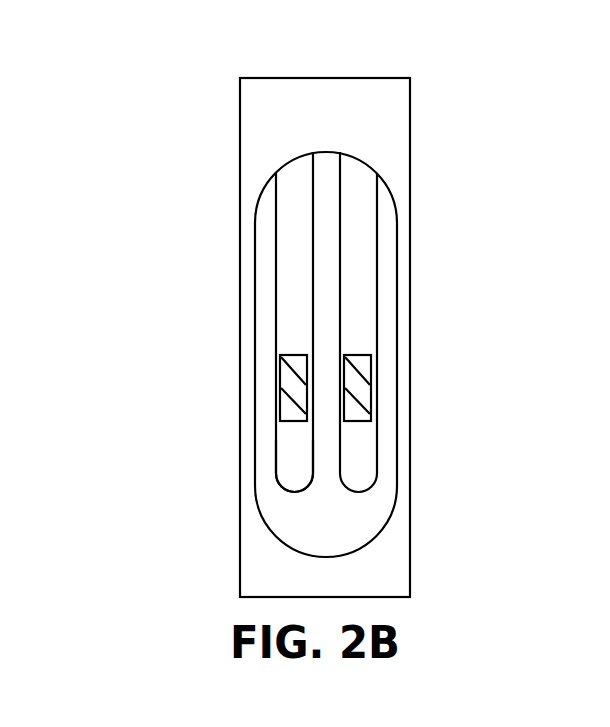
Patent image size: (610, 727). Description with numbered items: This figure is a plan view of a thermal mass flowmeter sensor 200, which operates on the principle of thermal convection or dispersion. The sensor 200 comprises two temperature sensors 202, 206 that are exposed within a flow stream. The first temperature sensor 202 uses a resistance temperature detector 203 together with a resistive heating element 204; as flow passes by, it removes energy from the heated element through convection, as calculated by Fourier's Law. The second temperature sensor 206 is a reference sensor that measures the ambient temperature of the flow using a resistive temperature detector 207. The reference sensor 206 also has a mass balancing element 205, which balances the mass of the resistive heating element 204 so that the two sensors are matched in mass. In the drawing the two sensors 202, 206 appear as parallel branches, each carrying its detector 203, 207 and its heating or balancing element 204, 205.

The thermal mass flowmeter sensor 200 is at (200, 105).
The temperature sensor 202 is at (392, 275).
The resistance temperature detector 203 is at (365, 392).
The resistive heating element 204 is at (385, 462).
The mass balancing element 205 is at (276, 466).
The second temperature sensor 206 is at (278, 316).
The resistive temperature detector 207 is at (282, 375).